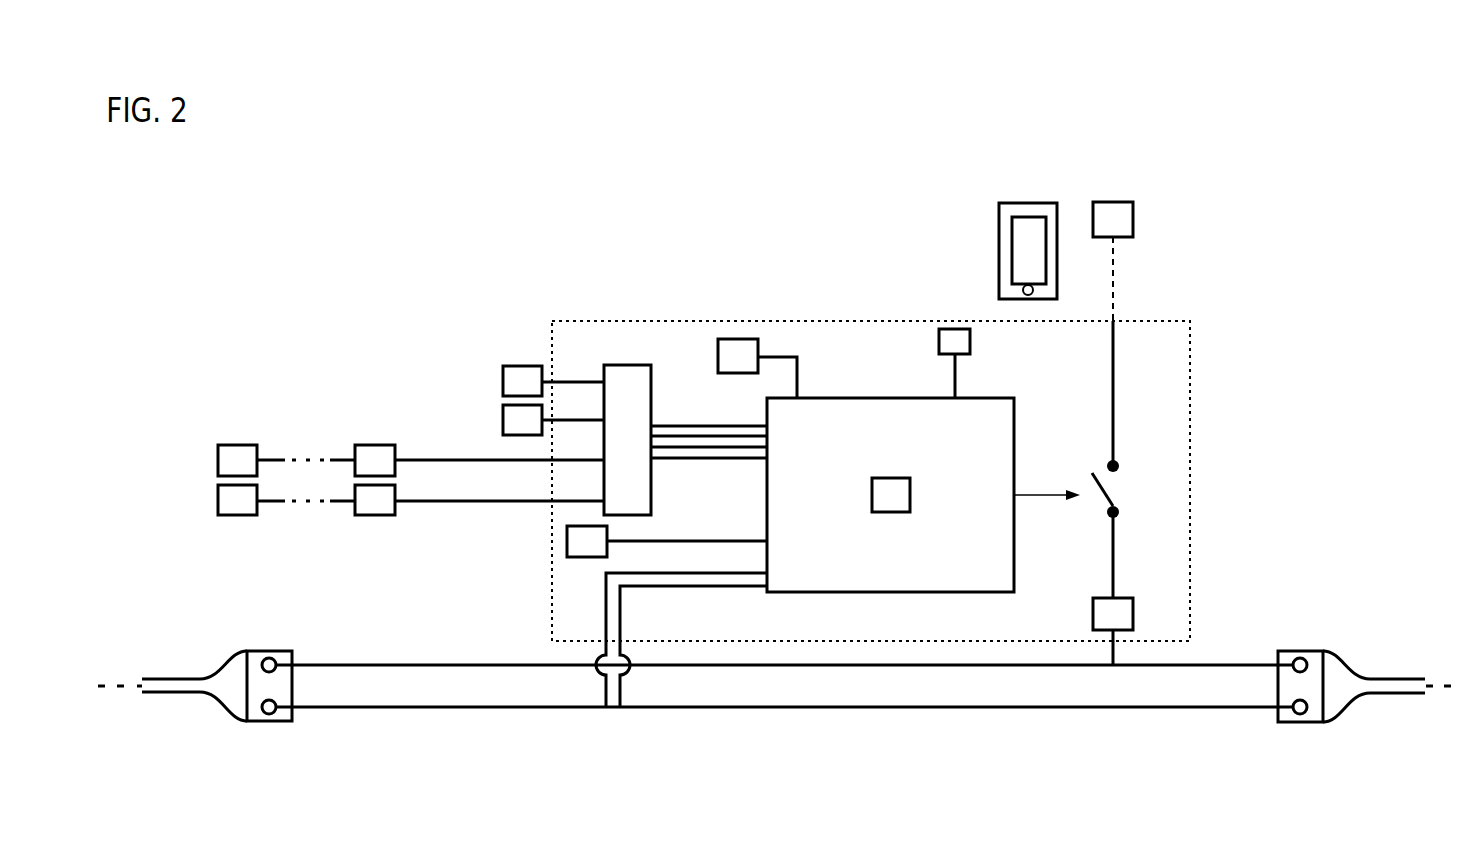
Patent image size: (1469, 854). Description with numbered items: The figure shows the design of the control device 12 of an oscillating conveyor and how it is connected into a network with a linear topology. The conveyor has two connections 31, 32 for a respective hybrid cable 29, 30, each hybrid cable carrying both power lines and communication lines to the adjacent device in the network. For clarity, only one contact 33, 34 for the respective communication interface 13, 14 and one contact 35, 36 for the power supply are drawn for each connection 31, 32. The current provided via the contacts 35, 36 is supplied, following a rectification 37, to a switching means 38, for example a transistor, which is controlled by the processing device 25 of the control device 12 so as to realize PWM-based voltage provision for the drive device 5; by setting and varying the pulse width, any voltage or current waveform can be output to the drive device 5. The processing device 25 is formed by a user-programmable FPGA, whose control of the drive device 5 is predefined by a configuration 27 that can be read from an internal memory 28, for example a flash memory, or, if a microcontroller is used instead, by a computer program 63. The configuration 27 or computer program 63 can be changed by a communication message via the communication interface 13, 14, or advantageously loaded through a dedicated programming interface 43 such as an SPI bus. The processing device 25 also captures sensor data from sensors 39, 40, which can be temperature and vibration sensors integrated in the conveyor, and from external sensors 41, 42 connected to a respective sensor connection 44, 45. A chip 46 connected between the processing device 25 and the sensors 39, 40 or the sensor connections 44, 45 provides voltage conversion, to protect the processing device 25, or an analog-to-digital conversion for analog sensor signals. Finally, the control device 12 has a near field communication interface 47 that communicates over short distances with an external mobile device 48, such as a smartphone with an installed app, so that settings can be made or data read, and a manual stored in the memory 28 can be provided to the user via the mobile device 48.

The drive device 5 is at (1133, 215).
The control device 12 is at (1195, 498).
The communication interface 13 is at (596, 649).
The communication interface 14 is at (632, 649).
The processing device 25 is at (912, 445).
The configuration 27 is at (935, 494).
The computer program 63 is at (910, 501).
The internal memory 28 is at (718, 350).
The hybrid cable 29 is at (192, 678).
The hybrid cable 30 is at (1388, 677).
The connection 31 is at (253, 723).
The connection 32 is at (1308, 722).
The contact 33 is at (278, 718).
The contact 34 is at (1292, 713).
The contact 35 is at (274, 655).
The contact 36 is at (1305, 655).
The rectification 37 is at (1133, 612).
The switching means 38 is at (1128, 484).
The sensor 39 is at (520, 365).
The sensor 40 is at (502, 422).
The sensor 41 is at (247, 446).
The sensor 42 is at (232, 515).
The programming interface 43 is at (567, 545).
The sensor connection 44 is at (380, 445).
The sensor connection 45 is at (373, 515).
The chip 46 is at (625, 393).
The near field communication interface 47 is at (970, 342).
The mobile device 48 is at (1006, 237).